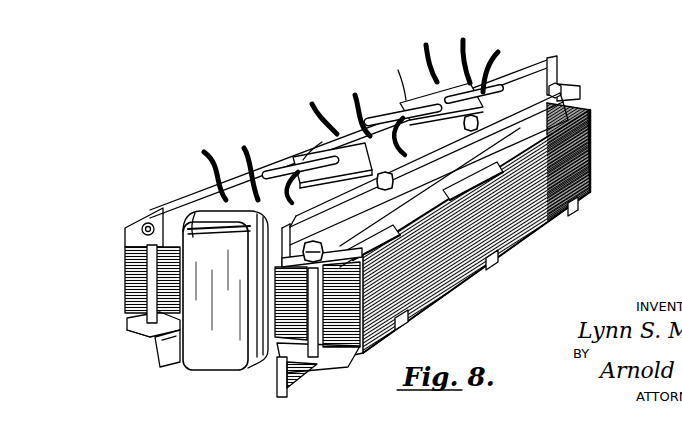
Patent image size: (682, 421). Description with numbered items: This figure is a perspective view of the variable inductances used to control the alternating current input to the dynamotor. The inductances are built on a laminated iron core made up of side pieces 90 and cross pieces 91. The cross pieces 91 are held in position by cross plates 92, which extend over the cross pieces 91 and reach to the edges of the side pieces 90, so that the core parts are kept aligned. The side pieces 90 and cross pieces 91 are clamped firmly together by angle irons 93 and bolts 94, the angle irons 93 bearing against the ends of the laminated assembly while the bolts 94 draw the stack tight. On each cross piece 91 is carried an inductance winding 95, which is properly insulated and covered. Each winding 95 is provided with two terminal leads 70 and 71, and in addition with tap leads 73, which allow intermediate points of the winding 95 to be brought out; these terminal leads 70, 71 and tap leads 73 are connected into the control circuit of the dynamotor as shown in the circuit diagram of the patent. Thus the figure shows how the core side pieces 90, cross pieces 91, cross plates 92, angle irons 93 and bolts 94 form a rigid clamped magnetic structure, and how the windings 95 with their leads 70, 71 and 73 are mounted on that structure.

The terminal lead 70 is at (298, 160).
The terminal lead 71 is at (204, 152).
The tap lead 73 is at (240, 147).
The side piece 90 is at (440, 290).
The cross piece 91 is at (125, 282).
The cross plate 92 is at (130, 318).
The angle iron 93 is at (165, 210).
The bolt 94 is at (125, 229).
The inductance winding 95 is at (195, 213).